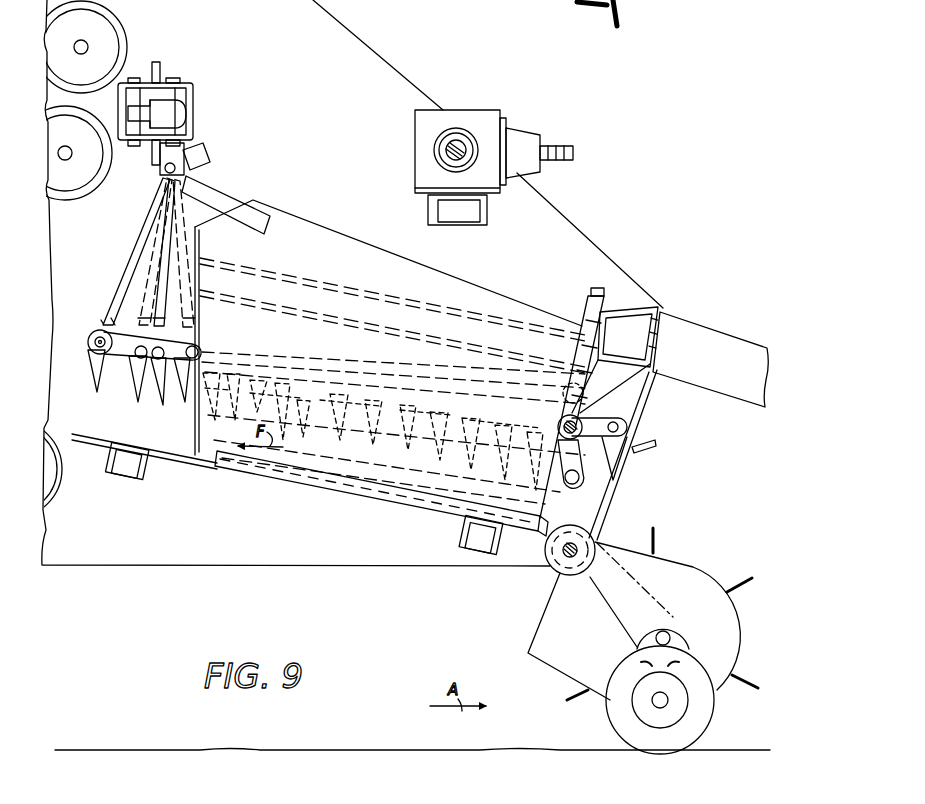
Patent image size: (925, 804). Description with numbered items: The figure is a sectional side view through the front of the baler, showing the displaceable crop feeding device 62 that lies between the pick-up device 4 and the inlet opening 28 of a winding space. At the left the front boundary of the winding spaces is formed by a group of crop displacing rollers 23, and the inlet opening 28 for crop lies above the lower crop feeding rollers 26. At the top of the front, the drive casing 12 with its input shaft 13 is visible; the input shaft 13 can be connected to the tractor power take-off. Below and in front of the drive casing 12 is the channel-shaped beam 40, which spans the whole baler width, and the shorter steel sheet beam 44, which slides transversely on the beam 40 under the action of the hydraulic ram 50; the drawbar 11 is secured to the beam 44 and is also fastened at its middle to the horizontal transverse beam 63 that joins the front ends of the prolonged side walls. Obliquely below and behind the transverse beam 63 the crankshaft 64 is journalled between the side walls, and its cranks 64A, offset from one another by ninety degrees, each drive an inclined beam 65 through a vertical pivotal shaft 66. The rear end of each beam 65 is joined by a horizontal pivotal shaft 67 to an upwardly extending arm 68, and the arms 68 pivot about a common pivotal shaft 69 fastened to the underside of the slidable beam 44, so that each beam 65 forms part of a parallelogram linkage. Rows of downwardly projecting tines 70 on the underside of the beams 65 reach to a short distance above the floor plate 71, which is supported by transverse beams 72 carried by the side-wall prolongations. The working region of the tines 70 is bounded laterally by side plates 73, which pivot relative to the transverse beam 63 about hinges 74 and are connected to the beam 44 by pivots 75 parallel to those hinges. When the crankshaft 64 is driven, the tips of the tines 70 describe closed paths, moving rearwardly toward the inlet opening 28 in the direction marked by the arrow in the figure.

The pick-up device 4 is at (688, 550).
The drawbar 11 is at (703, 330).
The drive casing 12 is at (424, 140).
The input shaft 13 is at (566, 146).
The crop displacing rollers 23 is at (108, 17).
The lower crop feeding rollers 26 is at (60, 480).
The inlet opening 28 is at (90, 421).
The beam 40 is at (128, 72).
The steel sheet beam 44 is at (196, 88).
The hydraulic ram 50 is at (172, 118).
The crop feeding device 62 is at (356, 232).
The transverse beam 63 is at (636, 300).
The crankshaft 64 is at (580, 407).
The cranks 64A is at (628, 427).
The beam 65 is at (344, 362).
The vertical pivotal shaft 66 is at (550, 352).
The horizontal pivotal shaft 67 is at (80, 332).
The arm 68 is at (152, 280).
The common pivotal shaft 69 is at (160, 170).
The tines 70 is at (165, 404).
The floor plate 71 is at (226, 476).
The transverse beams 72 is at (124, 480).
The side plates 73 is at (292, 224).
The hinges 74 is at (584, 292).
The pivots 75 is at (204, 155).